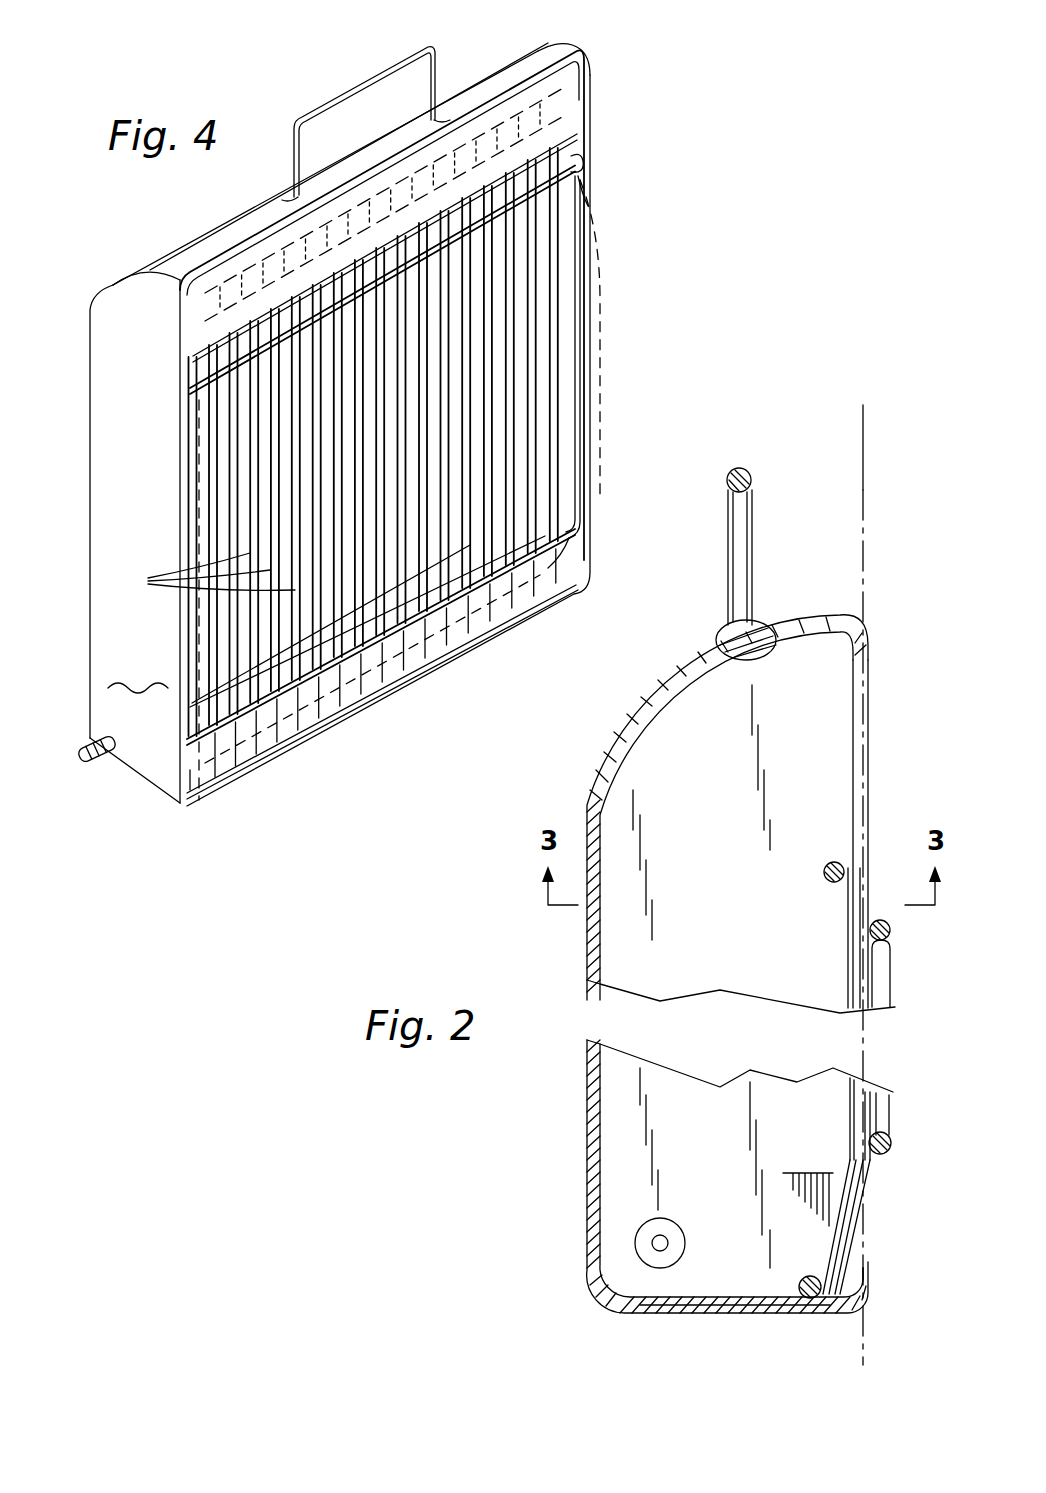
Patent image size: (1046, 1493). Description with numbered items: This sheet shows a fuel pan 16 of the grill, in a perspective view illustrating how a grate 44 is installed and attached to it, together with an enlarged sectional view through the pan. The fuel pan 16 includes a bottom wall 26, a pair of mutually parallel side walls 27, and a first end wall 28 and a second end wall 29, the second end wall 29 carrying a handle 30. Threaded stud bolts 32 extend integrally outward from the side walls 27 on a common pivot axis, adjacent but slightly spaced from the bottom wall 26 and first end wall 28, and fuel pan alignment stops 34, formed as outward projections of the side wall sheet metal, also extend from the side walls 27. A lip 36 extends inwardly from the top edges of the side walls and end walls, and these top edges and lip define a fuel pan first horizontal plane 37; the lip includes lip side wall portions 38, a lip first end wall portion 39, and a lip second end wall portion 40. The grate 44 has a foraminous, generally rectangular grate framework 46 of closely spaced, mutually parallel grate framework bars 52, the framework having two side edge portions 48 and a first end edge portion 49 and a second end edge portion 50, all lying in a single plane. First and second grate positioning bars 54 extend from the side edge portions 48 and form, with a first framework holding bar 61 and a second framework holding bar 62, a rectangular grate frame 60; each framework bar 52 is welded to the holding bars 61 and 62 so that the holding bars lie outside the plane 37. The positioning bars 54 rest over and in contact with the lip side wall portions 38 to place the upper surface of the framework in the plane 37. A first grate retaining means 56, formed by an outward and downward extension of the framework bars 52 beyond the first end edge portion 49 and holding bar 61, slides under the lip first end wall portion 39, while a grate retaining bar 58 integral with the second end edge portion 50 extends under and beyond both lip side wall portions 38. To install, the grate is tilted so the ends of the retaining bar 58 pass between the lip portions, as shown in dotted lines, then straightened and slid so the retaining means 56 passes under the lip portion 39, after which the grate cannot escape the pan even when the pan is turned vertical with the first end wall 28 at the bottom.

In FIG. 4, the fuel pan 16 is at (92, 303).
In FIG. 2, the fuel pan 16 is at (584, 1133).
In FIG. 4, the bottom wall 26 is at (497, 473).
In FIG. 4, the side wall 27 is at (100, 437).
In FIG. 4, the first end wall 28 is at (405, 660).
In FIG. 2, the first end wall 28 is at (680, 1313).
In FIG. 4, the second end wall 29 is at (538, 50).
In FIG. 4, the handle 30 is at (378, 78).
In FIG. 2, the handle 30 is at (760, 470).
In FIG. 4, the threaded stud bolt 32 is at (85, 757).
In FIG. 2, the threaded stud bolt 32 is at (668, 1235).
In FIG. 4, the fuel pan alignment stop 34 is at (110, 685).
In FIG. 2, the fuel pan alignment stop 34 is at (830, 1178).
In FIG. 4, the lip 36 is at (586, 544).
In FIG. 2, the lip 36 is at (858, 1274).
In FIG. 2, the fuel pan first horizontal plane 37 is at (863, 420).
In FIG. 4, the lip side wall portion 38 is at (590, 120).
In FIG. 2, the lip side wall portion 38 is at (853, 683).
In FIG. 4, the lip first end wall portion 39 is at (545, 600).
In FIG. 2, the lip first end wall portion 39 is at (850, 1263).
In FIG. 4, the lip second end wall portion 40 is at (222, 278).
In FIG. 4, the grate 44 is at (412, 182).
In FIG. 2, the grate 44 is at (886, 993).
In FIG. 4, the grate framework 46 is at (556, 318).
In FIG. 2, the grate framework 46 is at (855, 938).
In FIG. 4, the side edge portion 48 is at (556, 367).
In FIG. 4, the first end edge portion 49 is at (350, 715).
In FIG. 4, the second end edge portion 50 is at (571, 173).
In FIG. 4, the grate framework bar 52 is at (203, 571).
In FIG. 4, the grate positioning bar 54 is at (602, 229).
In FIG. 2, the grate positioning bar 54 is at (887, 1004).
In FIG. 4, the first grate retaining means 56 is at (278, 725).
In FIG. 2, the first grate retaining means 56 is at (830, 1246).
In FIG. 4, the grate retaining bar 58 is at (600, 46).
In FIG. 2, the grate retaining bar 58 is at (823, 872).
In FIG. 4, the grate frame 60 is at (190, 776).
In FIG. 2, the grate frame 60 is at (888, 967).
In FIG. 4, the first framework holding bar 61 is at (584, 580).
In FIG. 4, the second framework holding bar 62 is at (580, 203).